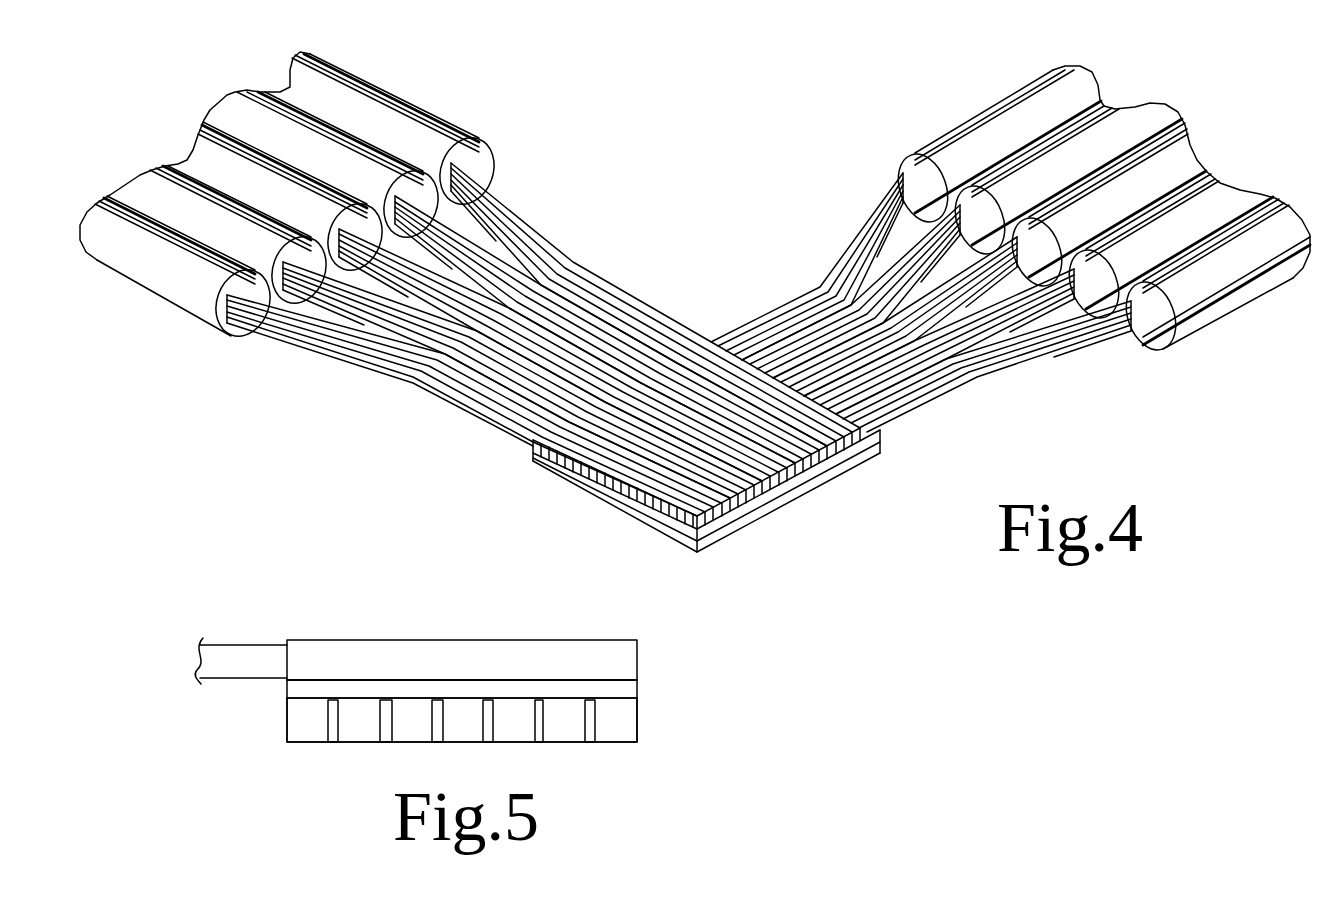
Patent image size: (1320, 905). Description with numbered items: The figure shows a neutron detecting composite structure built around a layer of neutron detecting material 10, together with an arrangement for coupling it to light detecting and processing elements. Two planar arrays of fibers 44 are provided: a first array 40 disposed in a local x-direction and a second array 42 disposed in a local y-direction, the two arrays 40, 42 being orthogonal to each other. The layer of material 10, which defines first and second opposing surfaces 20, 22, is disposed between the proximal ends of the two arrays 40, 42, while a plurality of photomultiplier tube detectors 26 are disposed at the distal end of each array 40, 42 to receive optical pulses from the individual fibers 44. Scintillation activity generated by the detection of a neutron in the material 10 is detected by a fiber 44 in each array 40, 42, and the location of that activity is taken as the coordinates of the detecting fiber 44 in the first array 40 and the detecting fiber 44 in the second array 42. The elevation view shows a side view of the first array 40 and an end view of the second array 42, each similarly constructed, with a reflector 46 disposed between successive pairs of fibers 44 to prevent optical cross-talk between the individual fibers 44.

In FIG. 4, the neutron detecting material 10 is at (779, 500).
In FIG. 5, the neutron detecting material 10 is at (648, 684).
In FIG. 5, the first surface 20 is at (453, 680).
In FIG. 5, the second surface 22 is at (362, 703).
In FIG. 4, the detector 26 is at (238, 107).
In FIG. 4, the first array 40 is at (632, 280).
In FIG. 5, the first array 40 is at (352, 632).
In FIG. 4, the second array 42 is at (755, 311).
In FIG. 5, the second array 42 is at (280, 730).
In FIG. 4, the fiber 44 is at (488, 373).
In FIG. 5, the fiber 44 is at (568, 728).
In FIG. 5, the reflector 46 is at (545, 710).